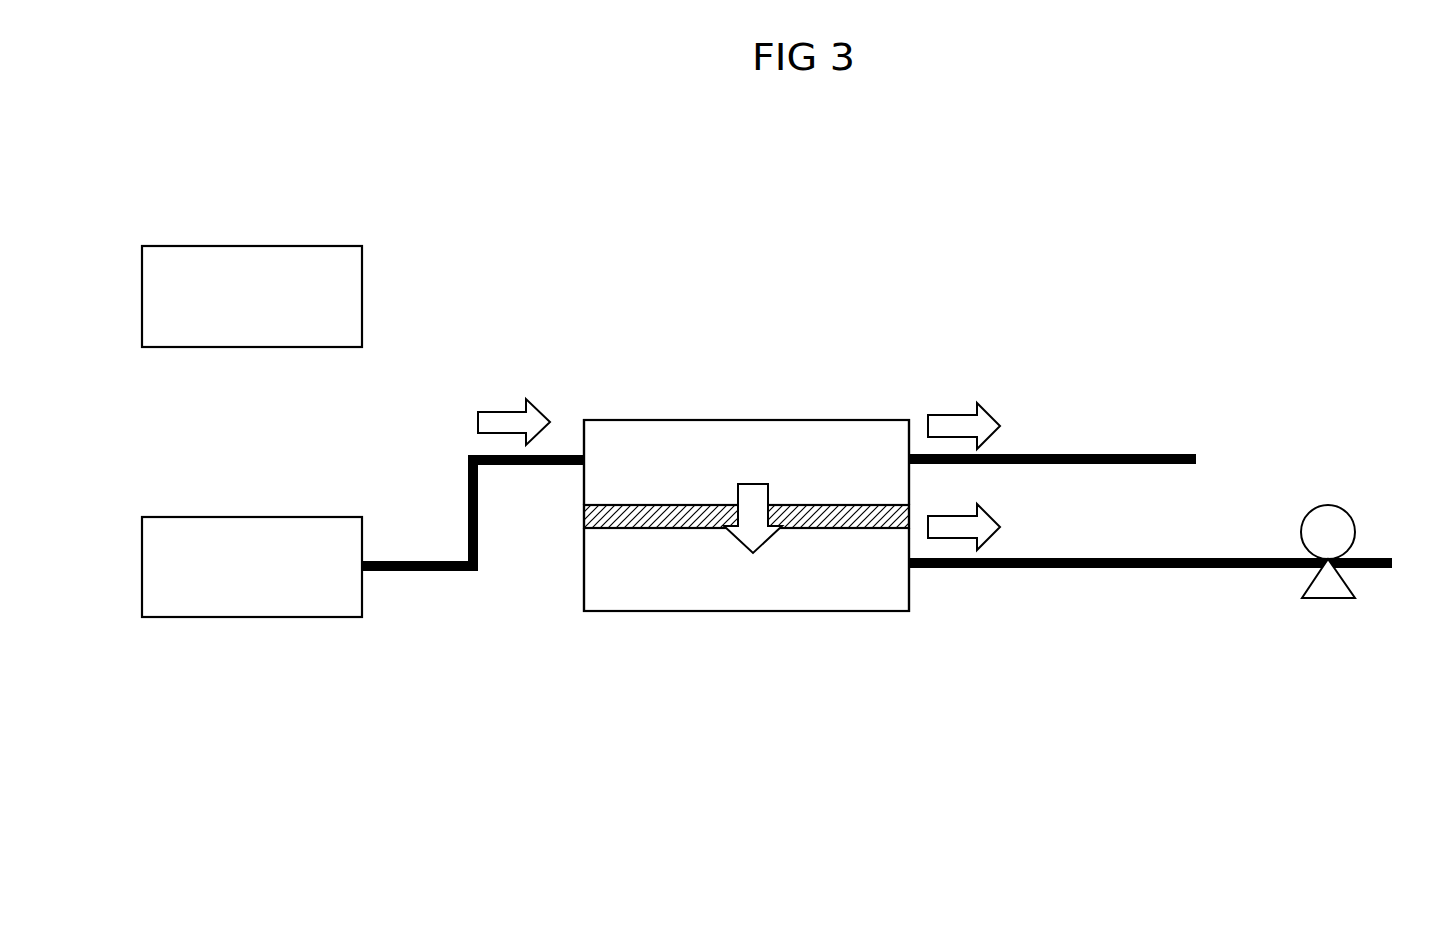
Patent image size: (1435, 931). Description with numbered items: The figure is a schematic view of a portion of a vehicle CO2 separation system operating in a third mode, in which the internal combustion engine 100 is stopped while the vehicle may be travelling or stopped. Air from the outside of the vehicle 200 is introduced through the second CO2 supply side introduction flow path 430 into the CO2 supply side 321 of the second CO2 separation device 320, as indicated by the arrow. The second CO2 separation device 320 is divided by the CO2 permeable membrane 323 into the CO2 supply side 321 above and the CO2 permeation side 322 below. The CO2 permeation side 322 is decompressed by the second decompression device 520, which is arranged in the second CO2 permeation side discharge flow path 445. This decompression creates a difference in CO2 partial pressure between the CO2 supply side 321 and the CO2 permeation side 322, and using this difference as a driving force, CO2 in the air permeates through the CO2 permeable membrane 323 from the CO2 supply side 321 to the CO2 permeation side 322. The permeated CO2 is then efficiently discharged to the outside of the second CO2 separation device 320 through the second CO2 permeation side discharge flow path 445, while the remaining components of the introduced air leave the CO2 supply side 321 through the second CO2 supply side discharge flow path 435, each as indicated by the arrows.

The internal combustion engine 100 is at (266, 290).
The outside of the vehicle 200 is at (227, 585).
The second CO2 separation device 320 is at (754, 400).
The CO2 supply side 321 is at (848, 435).
The CO2 permeation side 322 is at (836, 594).
The CO2 permeable membrane 323 is at (624, 520).
The second CO2 supply side introduction flow path 430 is at (440, 570).
The second CO2 supply side discharge flow path 435 is at (1146, 455).
The second CO2 permeation side discharge flow path 445 is at (1155, 570).
The second decompression device 520 is at (1328, 520).